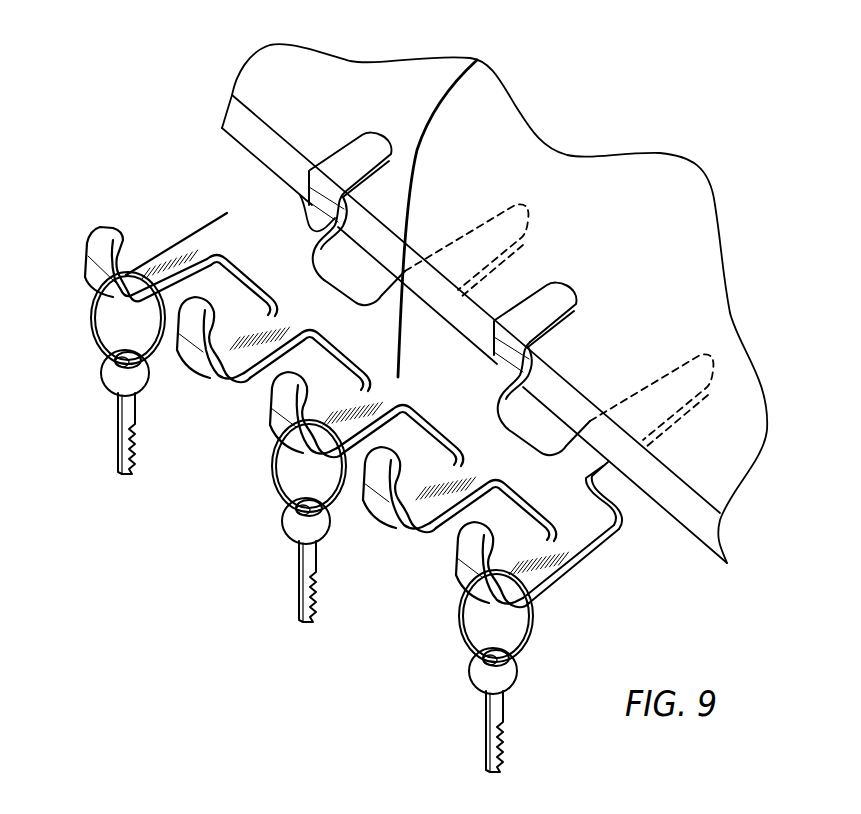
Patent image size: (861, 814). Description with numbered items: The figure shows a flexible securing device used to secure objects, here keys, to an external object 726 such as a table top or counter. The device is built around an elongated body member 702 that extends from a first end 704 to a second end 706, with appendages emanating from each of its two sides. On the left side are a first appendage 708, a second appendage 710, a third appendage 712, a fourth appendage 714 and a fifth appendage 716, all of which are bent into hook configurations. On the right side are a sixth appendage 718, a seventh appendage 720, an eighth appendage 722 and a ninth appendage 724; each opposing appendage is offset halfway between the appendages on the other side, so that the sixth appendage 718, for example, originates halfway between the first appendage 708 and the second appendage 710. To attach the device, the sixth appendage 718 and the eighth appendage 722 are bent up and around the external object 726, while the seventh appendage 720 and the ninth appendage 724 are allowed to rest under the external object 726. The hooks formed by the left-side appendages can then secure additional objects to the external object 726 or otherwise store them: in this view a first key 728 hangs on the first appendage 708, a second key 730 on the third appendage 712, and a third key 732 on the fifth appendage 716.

The elongated body member 702 is at (462, 84).
The first end 704 is at (228, 240).
The second end 706 is at (580, 508).
The first appendage 708 is at (190, 250).
The second appendage 710 is at (260, 328).
The third appendage 712 is at (353, 402).
The fourth appendage 714 is at (443, 473).
The fifth appendage 716 is at (538, 547).
The sixth appendage 718 is at (358, 167).
The seventh appendage 720 is at (510, 227).
The eighth appendage 722 is at (553, 297).
The ninth appendage 724 is at (687, 377).
The external object 726 is at (693, 457).
The first key 728 is at (113, 369).
The second key 730 is at (294, 517).
The third key 732 is at (481, 667).